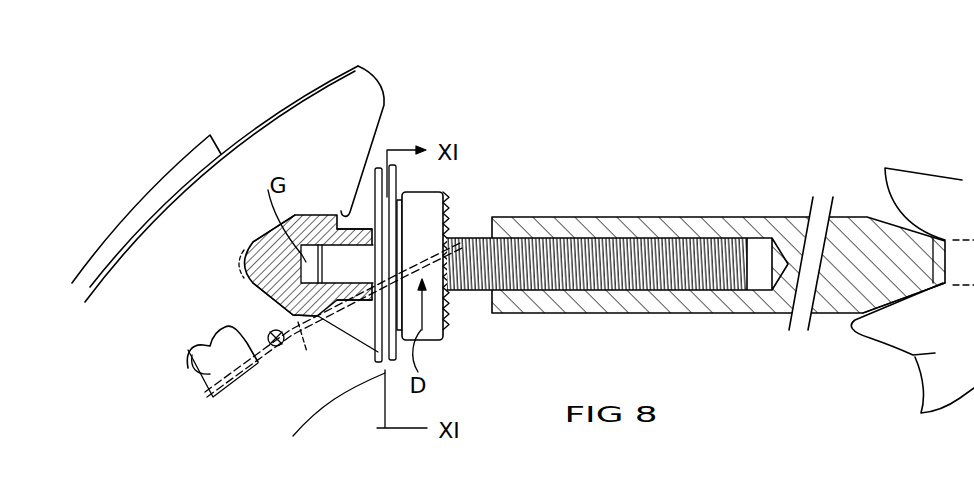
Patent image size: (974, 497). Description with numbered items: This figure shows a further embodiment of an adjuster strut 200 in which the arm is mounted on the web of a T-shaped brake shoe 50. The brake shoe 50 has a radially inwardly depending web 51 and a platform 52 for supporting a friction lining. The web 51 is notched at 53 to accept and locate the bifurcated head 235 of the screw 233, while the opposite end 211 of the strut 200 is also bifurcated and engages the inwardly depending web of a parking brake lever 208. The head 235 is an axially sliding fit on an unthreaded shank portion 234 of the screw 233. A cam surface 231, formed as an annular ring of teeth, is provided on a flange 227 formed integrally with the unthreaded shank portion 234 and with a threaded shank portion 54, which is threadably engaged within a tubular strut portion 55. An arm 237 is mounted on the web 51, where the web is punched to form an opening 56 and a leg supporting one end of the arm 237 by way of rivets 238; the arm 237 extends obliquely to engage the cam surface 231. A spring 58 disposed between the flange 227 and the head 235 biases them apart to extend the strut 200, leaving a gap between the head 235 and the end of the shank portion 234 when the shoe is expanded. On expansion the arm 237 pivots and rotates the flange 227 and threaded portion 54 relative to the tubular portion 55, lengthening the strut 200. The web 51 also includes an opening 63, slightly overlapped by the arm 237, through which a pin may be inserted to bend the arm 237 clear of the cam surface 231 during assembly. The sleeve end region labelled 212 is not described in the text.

The brake shoe 50 is at (280, 90).
The web 51 is at (385, 92).
The platform 52 is at (178, 170).
The notch 53 is at (235, 258).
The threaded shank portion 54 is at (572, 267).
The tubular strut portion 55 is at (698, 224).
The opening 56 is at (203, 340).
The spring 58 is at (398, 173).
The opening 63 is at (282, 347).
The adjuster strut 200 is at (768, 163).
The parking brake lever 208 is at (913, 355).
The opposite end 211 is at (873, 240).
The sleeve end 212 is at (763, 315).
The flange 227 is at (438, 343).
The cam surface 231 is at (447, 318).
The screw 233 is at (262, 298).
The unthreaded shank portion 234 is at (342, 260).
The head 235 is at (277, 237).
The arm 237 is at (307, 352).
The rivets 238 is at (250, 351).